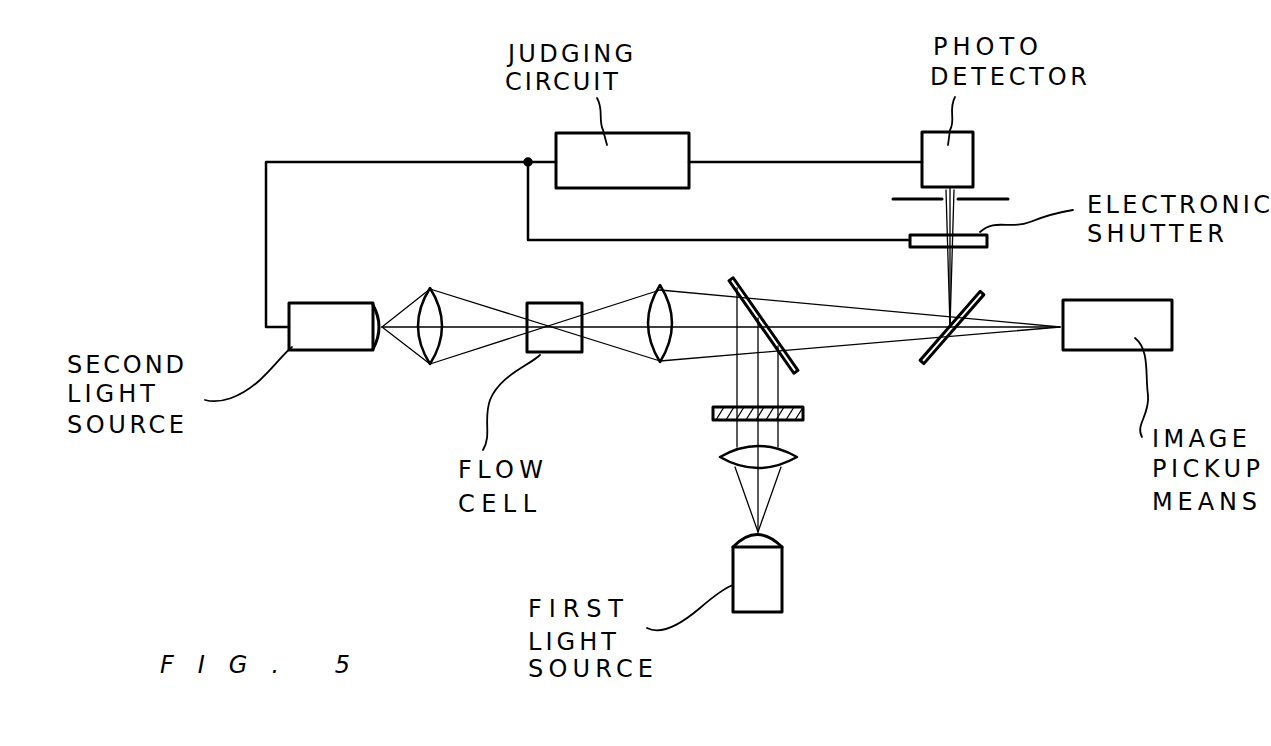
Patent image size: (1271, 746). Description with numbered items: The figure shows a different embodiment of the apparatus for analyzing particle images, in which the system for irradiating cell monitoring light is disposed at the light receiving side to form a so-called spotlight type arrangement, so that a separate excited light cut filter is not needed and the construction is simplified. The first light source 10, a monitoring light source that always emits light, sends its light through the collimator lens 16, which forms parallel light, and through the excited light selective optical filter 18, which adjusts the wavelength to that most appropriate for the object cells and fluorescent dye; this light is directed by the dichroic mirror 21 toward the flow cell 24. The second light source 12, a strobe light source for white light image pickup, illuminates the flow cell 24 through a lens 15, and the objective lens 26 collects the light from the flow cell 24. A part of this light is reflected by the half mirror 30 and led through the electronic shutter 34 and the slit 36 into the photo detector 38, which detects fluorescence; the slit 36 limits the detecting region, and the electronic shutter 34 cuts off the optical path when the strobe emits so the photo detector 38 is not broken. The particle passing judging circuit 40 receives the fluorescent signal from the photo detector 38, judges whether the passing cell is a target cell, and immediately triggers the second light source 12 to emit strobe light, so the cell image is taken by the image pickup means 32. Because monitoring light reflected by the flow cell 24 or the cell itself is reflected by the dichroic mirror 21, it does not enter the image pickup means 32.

The first light source 10 is at (782, 578).
The second light source 12 is at (323, 350).
The lens 15 is at (428, 364).
The collimator lens 16 is at (797, 457).
The excited light selective optical filter 18 is at (803, 408).
The dichroic mirror 21 is at (743, 280).
The flow cell 24 is at (570, 352).
The objective lens 26 is at (665, 361).
The half mirror 30 is at (925, 362).
The image pickup means 32 is at (1090, 350).
The electronic shutter 34 is at (987, 243).
The slit 36 is at (1008, 199).
The photo detector 38 is at (975, 138).
The particle passing judging circuit 40 is at (647, 188).